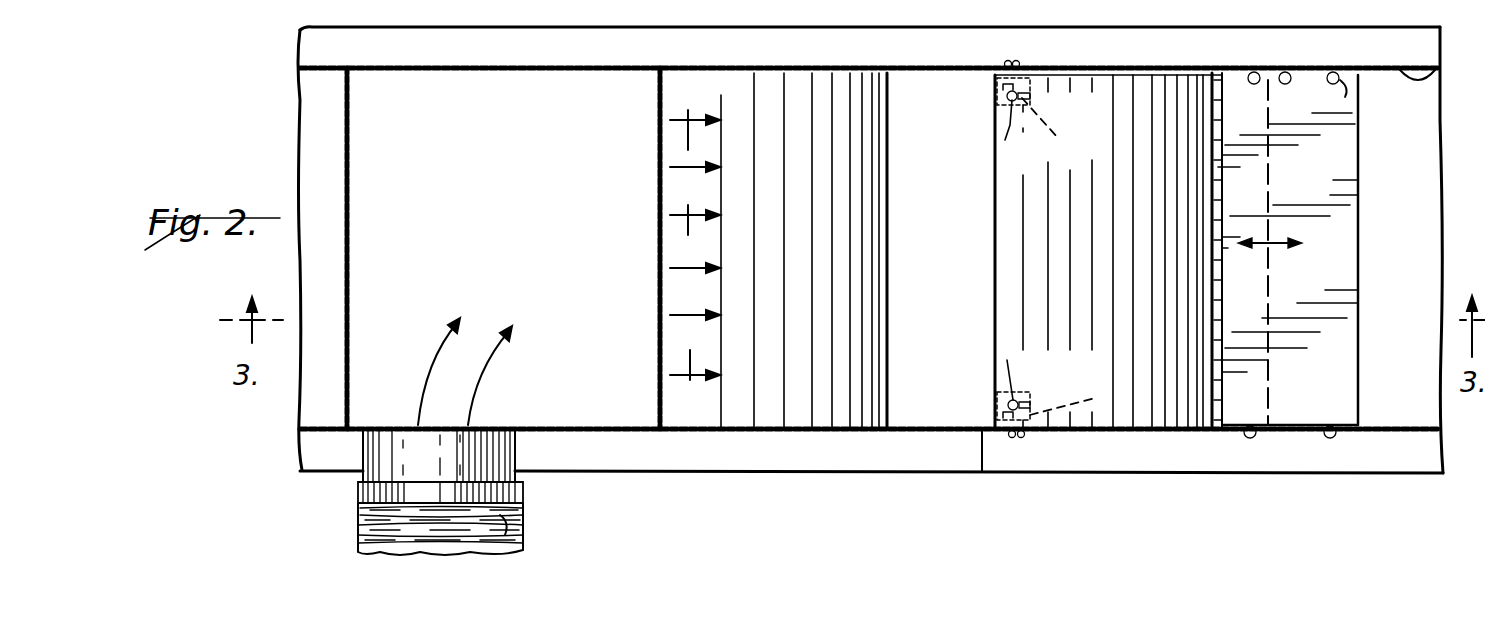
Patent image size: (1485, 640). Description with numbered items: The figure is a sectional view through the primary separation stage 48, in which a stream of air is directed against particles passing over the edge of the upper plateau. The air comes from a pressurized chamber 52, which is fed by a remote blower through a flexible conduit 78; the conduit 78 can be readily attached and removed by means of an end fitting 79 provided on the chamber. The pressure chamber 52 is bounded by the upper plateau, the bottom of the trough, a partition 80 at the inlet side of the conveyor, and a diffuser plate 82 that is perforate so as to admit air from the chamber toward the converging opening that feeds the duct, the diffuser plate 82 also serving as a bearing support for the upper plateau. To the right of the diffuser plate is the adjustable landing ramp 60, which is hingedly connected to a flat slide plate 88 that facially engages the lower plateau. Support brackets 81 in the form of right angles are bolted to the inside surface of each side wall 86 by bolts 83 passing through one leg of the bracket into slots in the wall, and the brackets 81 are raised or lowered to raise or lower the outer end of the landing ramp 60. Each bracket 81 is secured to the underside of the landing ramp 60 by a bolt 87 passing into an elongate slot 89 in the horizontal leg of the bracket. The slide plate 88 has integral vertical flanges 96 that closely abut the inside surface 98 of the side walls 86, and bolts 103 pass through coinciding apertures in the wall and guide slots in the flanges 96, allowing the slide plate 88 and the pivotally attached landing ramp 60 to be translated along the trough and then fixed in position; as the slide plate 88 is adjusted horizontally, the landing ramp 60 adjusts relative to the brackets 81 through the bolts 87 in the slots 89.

The primary separation stage 48 is at (943, 477).
The pressurized chamber 52 is at (590, 413).
The landing ramp 60 is at (1023, 224).
The flexible conduit 78 is at (525, 530).
The end fitting 79 is at (388, 445).
The partition 80 is at (345, 352).
The support bracket 81 is at (1074, 256).
The diffuser plate 82 is at (660, 283).
The bolt 83 is at (1020, 62).
The side wall 86 is at (968, 68).
The bolt 87 is at (1020, 250).
The slide plate 88 is at (1335, 182).
The elongate slot 89 is at (1025, 96).
The vertical flange 96 is at (1297, 70).
The inside surface 98 is at (1438, 81).
The bolt 103 is at (1256, 70).